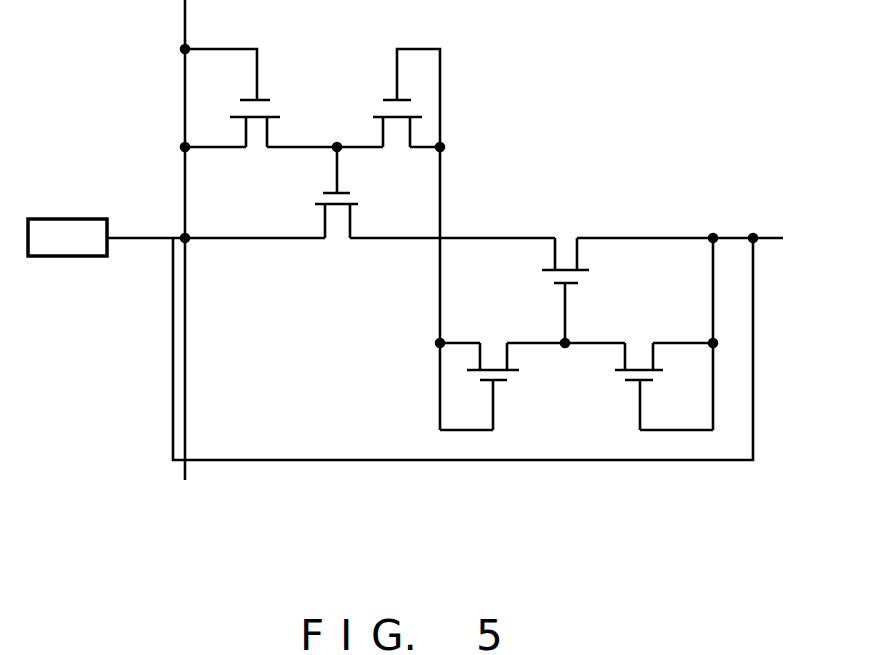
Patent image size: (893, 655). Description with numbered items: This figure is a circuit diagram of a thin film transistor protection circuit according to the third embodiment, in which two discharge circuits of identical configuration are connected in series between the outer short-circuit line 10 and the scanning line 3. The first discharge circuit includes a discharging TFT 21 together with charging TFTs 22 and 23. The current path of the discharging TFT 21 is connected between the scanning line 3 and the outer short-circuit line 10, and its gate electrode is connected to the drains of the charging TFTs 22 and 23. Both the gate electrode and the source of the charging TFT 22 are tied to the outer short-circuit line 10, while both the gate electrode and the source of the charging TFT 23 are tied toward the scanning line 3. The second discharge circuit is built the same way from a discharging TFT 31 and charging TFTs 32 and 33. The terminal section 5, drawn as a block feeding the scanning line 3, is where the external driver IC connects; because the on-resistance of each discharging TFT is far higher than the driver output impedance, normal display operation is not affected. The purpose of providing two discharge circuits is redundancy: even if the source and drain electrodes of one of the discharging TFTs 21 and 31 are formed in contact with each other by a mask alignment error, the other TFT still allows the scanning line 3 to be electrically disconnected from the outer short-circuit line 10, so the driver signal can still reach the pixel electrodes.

The outer short-circuit line 10 is at (187, 30).
The terminal section 5 is at (78, 252).
The charging TFT 22 is at (256, 141).
The charging TFT 23 is at (397, 141).
The discharging TFT 21 is at (338, 222).
The discharging TFT 31 is at (568, 233).
The charging TFT 32 is at (493, 356).
The charging TFT 33 is at (640, 356).
The scanning line 3 is at (770, 235).